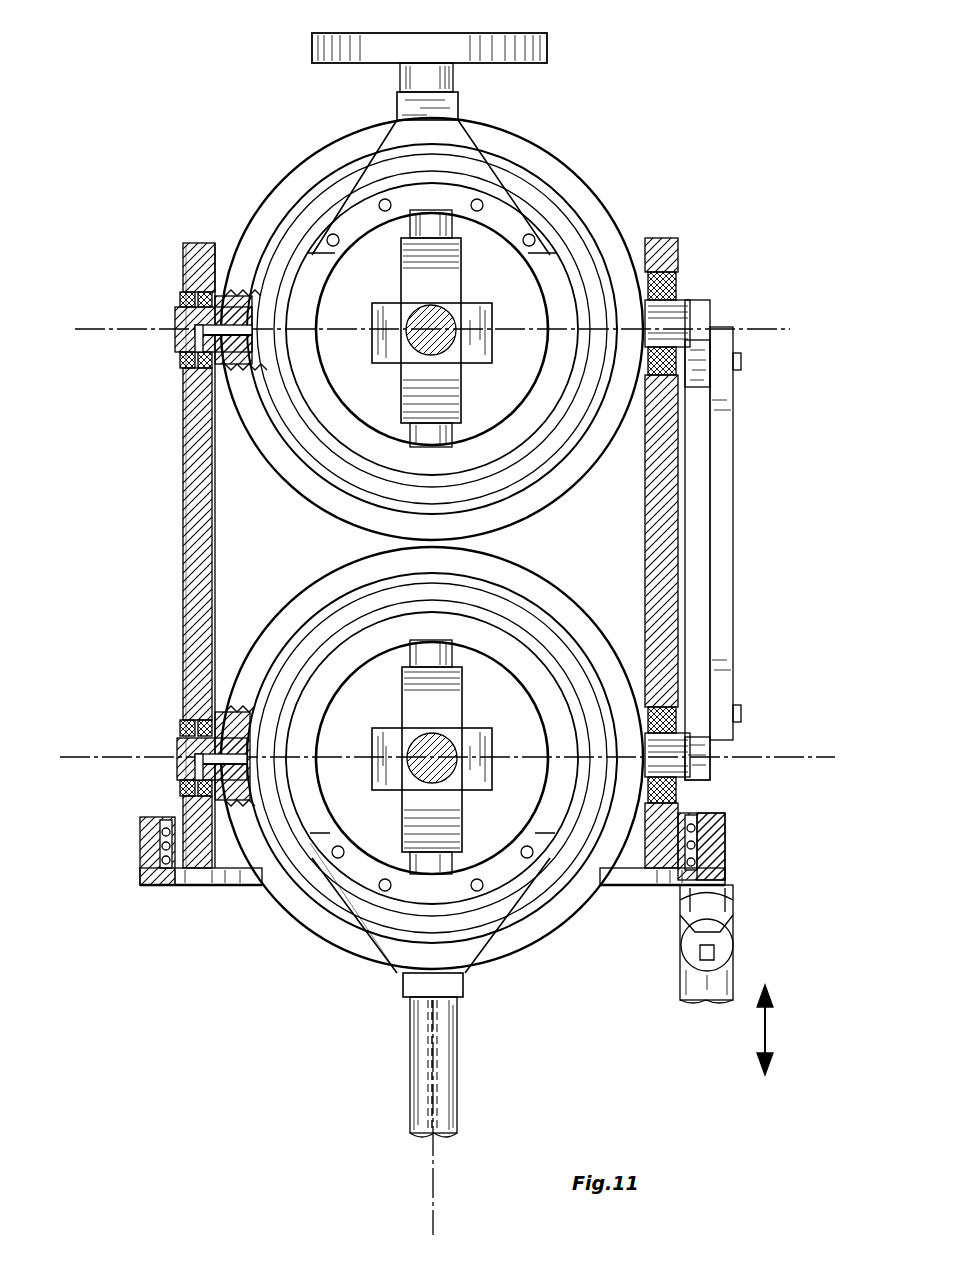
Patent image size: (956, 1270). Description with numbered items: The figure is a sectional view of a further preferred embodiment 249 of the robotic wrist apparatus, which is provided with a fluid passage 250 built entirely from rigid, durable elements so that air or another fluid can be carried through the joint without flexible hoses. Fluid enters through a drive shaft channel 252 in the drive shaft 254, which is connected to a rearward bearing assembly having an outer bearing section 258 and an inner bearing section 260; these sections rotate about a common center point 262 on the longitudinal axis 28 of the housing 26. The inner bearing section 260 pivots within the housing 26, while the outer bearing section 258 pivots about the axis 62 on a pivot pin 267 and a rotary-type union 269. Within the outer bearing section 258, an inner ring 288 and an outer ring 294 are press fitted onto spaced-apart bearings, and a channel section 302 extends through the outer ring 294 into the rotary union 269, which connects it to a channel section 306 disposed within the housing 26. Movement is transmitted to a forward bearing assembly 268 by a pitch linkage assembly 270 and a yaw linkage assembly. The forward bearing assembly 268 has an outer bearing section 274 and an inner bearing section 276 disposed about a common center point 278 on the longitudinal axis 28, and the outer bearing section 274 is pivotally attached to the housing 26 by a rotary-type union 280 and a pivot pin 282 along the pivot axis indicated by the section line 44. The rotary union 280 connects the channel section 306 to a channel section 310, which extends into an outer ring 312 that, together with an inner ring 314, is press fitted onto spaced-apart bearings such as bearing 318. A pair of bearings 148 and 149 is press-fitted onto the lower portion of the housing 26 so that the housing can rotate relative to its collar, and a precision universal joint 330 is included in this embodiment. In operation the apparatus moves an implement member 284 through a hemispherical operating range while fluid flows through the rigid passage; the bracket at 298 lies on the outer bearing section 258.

The implement member 284 is at (547, 44).
The further preferred embodiment 249 is at (242, 135).
The outer bearing section 274 is at (560, 153).
The forward bearing assembly 268 is at (625, 213).
The channel section 310 is at (240, 290).
The inner bearing section 276 is at (455, 258).
The pivot pin 282 is at (682, 302).
The upper axis section line 44 is at (820, 300).
The rotary-type union 280 is at (186, 332).
The inner ring 314 is at (312, 372).
The common center point 278 is at (437, 338).
The pitch linkage assembly 270 is at (742, 433).
The fluid passage 250 is at (192, 488).
The bearing 318 is at (542, 452).
The housing 26 is at (700, 522).
The outer ring 312 is at (300, 498).
The channel section 306 is at (190, 592).
The lower wheel ring 298 is at (338, 628).
The outer bearing section 258 is at (548, 572).
The channel section 302 is at (228, 745).
The inner ring 288 is at (305, 740).
The inner bearing section 260 is at (462, 708).
The axis 62 is at (802, 740).
The rotary-type union 269 is at (188, 762).
The common center point 262 is at (440, 770).
The pivot pin 267 is at (672, 775).
The bearing 148 is at (695, 832).
The bearing 149 is at (698, 858).
The outer ring 294 is at (302, 905).
The universal joint 330 is at (735, 963).
The drive shaft 254 is at (452, 1062).
The drive shaft channel 252 is at (432, 1076).
The longitudinal axis 28 is at (435, 1193).